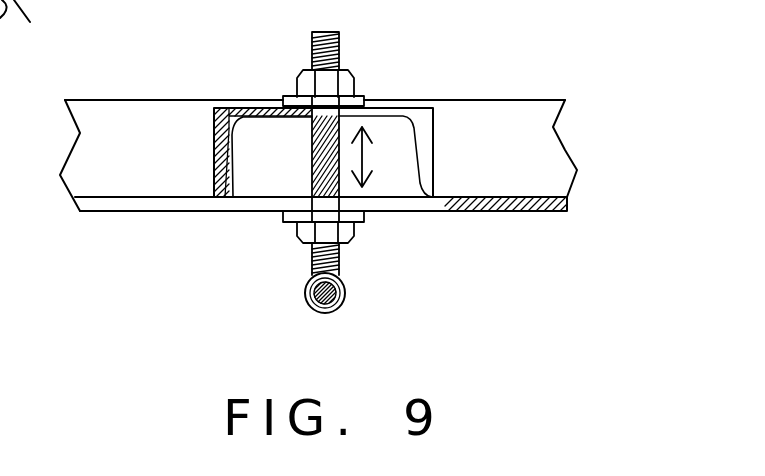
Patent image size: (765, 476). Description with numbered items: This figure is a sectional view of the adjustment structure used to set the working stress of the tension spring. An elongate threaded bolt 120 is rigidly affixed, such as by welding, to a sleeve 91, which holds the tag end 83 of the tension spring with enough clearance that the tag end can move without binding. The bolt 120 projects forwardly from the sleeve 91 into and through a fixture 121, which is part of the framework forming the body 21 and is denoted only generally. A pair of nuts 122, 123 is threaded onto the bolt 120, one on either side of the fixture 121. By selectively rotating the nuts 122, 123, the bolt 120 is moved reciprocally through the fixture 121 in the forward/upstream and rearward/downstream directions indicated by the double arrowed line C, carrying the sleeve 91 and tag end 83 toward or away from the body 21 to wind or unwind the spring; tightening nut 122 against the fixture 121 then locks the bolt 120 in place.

The threaded bolt 120 is at (313, 167).
The fixture 121 is at (435, 120).
The nut 122 is at (353, 240).
The nut 123 is at (353, 76).
The body 21 is at (555, 213).
The tag end 83 is at (338, 313).
The sleeve 91 is at (315, 317).
The double arrowed line C is at (363, 153).